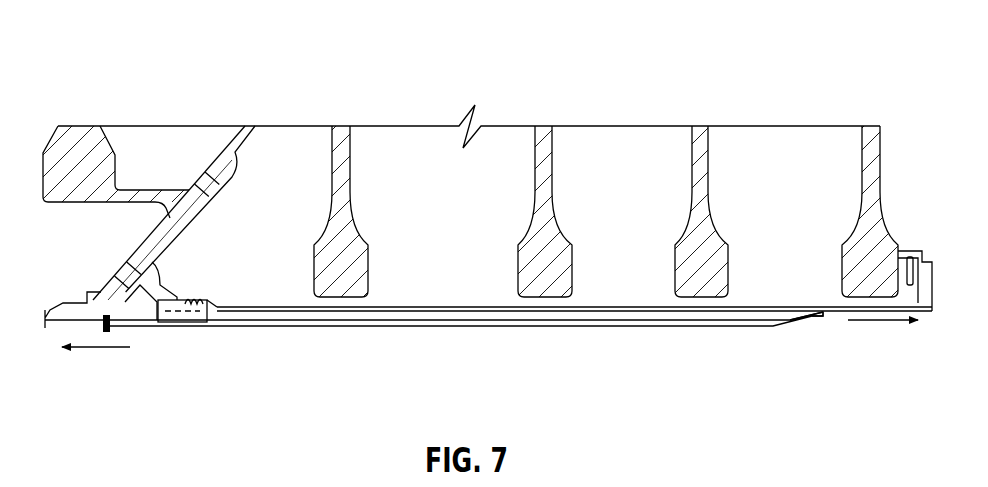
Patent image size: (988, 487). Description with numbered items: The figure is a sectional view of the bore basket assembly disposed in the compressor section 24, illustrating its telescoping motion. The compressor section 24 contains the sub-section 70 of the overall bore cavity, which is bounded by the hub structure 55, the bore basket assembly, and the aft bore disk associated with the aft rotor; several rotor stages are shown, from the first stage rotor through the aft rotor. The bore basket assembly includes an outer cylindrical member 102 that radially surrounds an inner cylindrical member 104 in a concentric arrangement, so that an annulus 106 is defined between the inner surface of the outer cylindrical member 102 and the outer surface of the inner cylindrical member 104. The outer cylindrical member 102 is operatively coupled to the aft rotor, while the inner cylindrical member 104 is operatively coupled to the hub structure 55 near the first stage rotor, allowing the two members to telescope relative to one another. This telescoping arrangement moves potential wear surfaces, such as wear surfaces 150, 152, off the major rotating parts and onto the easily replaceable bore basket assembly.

The compressor section 24 is at (95, 57).
The hub structure 55 is at (235, 143).
The sub-section of the bore cavity 70 is at (467, 207).
The outer cylindrical member 102 is at (622, 307).
The inner cylindrical member 104 is at (663, 328).
The annulus 106 is at (438, 304).
The wear surface 150 is at (203, 300).
The wear surface 152 is at (808, 325).